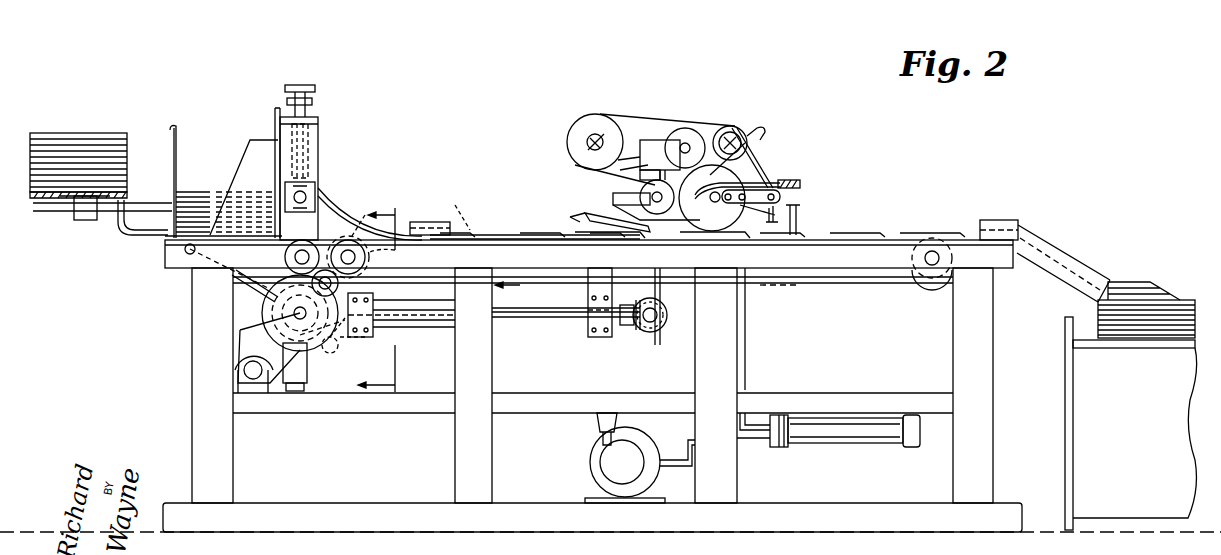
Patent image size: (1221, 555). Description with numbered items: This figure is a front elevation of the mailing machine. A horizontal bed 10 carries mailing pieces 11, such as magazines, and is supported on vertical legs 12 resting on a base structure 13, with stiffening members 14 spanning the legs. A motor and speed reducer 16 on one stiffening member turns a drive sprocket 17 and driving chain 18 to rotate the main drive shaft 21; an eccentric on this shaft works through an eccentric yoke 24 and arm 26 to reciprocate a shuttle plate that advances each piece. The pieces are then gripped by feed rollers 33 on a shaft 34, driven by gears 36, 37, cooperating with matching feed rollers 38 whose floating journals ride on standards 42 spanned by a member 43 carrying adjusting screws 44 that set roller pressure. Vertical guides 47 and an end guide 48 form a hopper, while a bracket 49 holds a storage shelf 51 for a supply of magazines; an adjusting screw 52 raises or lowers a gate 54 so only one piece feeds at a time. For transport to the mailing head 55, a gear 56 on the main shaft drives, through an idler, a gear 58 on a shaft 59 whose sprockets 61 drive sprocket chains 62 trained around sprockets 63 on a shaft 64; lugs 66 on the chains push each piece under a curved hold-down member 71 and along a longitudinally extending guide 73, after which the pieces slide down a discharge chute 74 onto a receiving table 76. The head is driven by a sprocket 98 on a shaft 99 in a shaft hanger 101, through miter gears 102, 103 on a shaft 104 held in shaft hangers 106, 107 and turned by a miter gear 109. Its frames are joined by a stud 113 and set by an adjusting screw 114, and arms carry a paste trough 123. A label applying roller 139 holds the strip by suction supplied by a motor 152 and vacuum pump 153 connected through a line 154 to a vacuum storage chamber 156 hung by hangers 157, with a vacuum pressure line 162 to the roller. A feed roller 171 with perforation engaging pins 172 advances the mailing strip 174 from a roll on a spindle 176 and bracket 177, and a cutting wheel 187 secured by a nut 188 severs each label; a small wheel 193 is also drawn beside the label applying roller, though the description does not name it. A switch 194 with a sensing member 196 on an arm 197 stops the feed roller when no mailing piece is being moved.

The horizontal bed 10 is at (806, 276).
The mailing pieces 11 is at (77, 134).
The vertical legs 12 is at (195, 410).
The base structure 13 is at (355, 512).
The stiffening members 14 is at (410, 412).
The motor and speed reducer 16 is at (305, 378).
The drive sprocket 17 is at (244, 376).
The driving chain 18 is at (250, 340).
The main drive shaft 21 is at (298, 314).
The eccentric yoke 24 is at (245, 300).
The arm 26 is at (215, 290).
The feed rollers 33 is at (318, 215).
The shaft 34 is at (285, 250).
The gear 36 is at (296, 278).
The gear 37 is at (308, 358).
The matching feed rollers 38 is at (330, 200).
The standards 42 is at (318, 155).
The member 43 is at (318, 122).
The adjusting screws 44 is at (312, 100).
The vertical guides 47 is at (252, 156).
The end guide 48 is at (176, 140).
The bracket 49 is at (130, 234).
The storage shelf 51 is at (118, 200).
The adjusting screw 52 is at (308, 85).
The gate 54 is at (275, 116).
The mailing head 55 is at (674, 232).
The gear 56 is at (333, 344).
The gear 58 is at (393, 251).
The shaft 59 is at (362, 260).
The sprockets 61 is at (400, 224).
The sprocket chains 62 is at (410, 310).
The sprockets 63 is at (930, 278).
The shaft 64 is at (925, 253).
The lugs 66 is at (458, 230).
The curved hold-down member 71 is at (354, 222).
The longitudinally extending guide 73 is at (905, 232).
The discharge chute 74 is at (1060, 250).
The receiving table 76 is at (1110, 358).
The sprocket 98 is at (660, 312).
The shaft 99 is at (655, 322).
The shaft hanger 101 is at (661, 335).
The miter gear 102 is at (660, 316).
The miter gear 103 is at (638, 333).
The shaft 104 is at (552, 318).
The shaft hanger 106 is at (401, 312).
The shaft hanger 107 is at (590, 334).
The miter gear 109 is at (362, 348).
The stud 113 is at (745, 130).
The adjusting screw 114 is at (782, 215).
The trough 123 is at (646, 180).
The label applying roller 139 is at (722, 220).
The motor 152 is at (588, 464).
The vacuum pump 153 is at (648, 440).
The line 154 is at (748, 440).
The vacuum storage chamber 156 is at (860, 443).
The hangers 157 is at (792, 445).
The vacuum pressure line 162 is at (764, 175).
The feed roller 171 is at (762, 136).
The perforation engaging pins 172 is at (755, 156).
The mailing strip 174 is at (605, 120).
The spindle 176 is at (585, 160).
The bracket 177 is at (618, 158).
The cutting wheel 187 is at (680, 128).
The nut 188 is at (695, 135).
The wheel 193 is at (637, 195).
The switch 194 is at (568, 214).
The sensing member 196 is at (665, 236).
The arm 197 is at (612, 236).